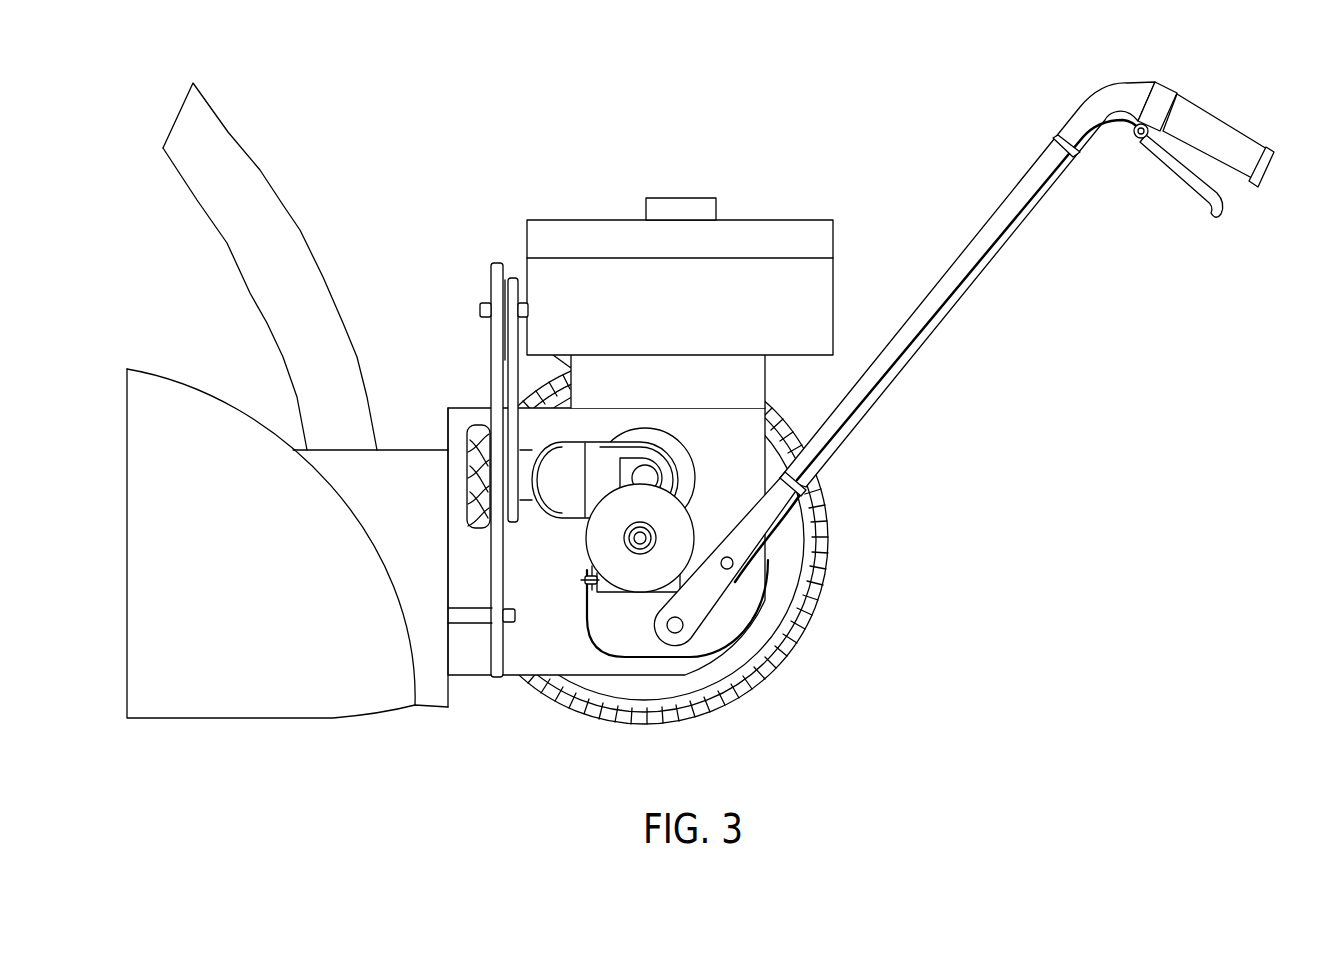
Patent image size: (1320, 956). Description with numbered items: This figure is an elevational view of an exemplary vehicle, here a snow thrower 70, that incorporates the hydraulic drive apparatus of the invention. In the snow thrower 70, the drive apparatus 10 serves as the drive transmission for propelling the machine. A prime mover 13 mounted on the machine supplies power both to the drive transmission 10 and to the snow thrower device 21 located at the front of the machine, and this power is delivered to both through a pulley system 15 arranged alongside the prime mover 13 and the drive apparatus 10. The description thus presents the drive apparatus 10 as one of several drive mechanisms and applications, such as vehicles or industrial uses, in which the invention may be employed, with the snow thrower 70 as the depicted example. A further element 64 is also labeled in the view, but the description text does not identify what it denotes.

The snow thrower 70 is at (700, 394).
The auger housing with discharge chute 21 is at (361, 672).
The engine 13 is at (697, 317).
The side plate 15 is at (452, 313).
The drive / clutch mechanism 10 is at (712, 478).
The cable bracket 64 is at (590, 577).